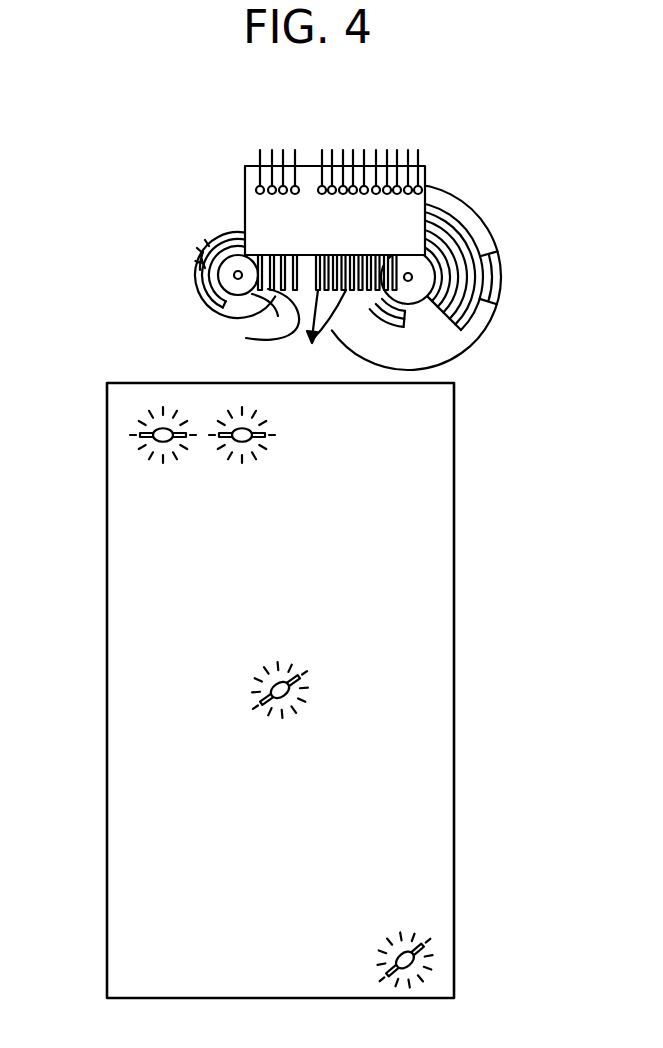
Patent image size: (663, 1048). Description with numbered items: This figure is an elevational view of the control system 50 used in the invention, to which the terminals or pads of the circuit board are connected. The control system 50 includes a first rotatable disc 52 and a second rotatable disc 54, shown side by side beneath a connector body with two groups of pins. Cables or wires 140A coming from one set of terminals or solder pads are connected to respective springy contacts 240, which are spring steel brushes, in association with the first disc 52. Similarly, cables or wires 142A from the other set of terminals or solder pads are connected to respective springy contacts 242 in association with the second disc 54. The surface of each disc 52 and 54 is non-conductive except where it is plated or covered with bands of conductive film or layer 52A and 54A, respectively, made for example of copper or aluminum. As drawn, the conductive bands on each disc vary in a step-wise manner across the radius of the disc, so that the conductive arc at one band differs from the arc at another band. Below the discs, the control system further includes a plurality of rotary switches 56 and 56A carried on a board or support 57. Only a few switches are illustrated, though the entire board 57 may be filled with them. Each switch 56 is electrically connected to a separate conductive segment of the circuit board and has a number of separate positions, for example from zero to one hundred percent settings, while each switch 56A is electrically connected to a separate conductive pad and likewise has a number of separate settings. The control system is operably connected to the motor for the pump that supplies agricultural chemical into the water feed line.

The control system 50 is at (44, 240).
The first rotatable disc 52 is at (454, 277).
The conductive film or layer 52A is at (481, 306).
The second rotatable disc 54 is at (193, 253).
The conductive film or layer 54A is at (207, 247).
The cables or wires 140A is at (407, 152).
The cables or wires 142A is at (272, 152).
The springy contacts 240 is at (311, 333).
The springy contacts 242 is at (246, 324).
The rotary switches 56 is at (292, 690).
The rotary switches 56A is at (220, 438).
The board or support 57 is at (456, 622).